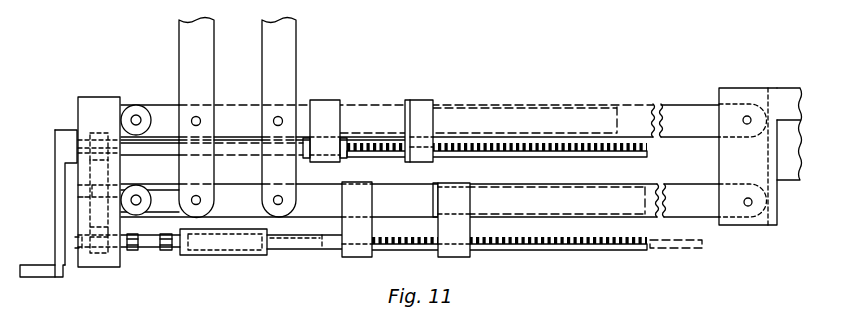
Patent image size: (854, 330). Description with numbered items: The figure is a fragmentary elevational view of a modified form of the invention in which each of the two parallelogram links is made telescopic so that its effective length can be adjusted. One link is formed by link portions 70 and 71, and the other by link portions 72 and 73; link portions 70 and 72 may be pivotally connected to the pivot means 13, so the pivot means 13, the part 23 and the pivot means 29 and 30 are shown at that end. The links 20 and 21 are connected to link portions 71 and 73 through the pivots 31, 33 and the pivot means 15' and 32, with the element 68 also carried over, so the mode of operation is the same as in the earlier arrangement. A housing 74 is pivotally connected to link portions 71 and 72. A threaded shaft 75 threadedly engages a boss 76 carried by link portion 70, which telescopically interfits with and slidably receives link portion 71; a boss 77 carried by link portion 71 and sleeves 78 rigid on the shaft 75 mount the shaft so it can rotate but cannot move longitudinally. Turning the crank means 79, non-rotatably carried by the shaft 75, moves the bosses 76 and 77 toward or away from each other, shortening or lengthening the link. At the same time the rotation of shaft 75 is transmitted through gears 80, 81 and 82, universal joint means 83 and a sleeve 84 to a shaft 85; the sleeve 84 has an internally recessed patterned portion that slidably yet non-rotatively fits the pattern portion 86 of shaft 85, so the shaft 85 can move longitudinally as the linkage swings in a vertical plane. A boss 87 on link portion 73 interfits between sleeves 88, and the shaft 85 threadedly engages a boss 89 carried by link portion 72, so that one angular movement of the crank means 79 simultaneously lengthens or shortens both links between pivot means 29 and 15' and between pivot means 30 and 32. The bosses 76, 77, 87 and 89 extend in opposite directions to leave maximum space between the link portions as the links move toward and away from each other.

The pivot means 13 is at (739, 75).
The pivot means 15' is at (311, 100).
The link 20 is at (201, 80).
The link 21 is at (283, 65).
The pivot means part 23 is at (728, 156).
The pivot means 29 is at (747, 114).
The pivot means 30 is at (746, 207).
The pivot 31 is at (199, 119).
The pivot means 32 is at (274, 201).
The pivot 33 is at (199, 198).
The link connection element 68 is at (272, 180).
The link portion 70 is at (686, 112).
The link portion 71 is at (163, 114).
The link portion 72 is at (687, 193).
The link portion 73 is at (162, 196).
The housing 74 is at (101, 268).
The threaded shaft 75 is at (470, 153).
The boss 76 is at (420, 110).
The boss 77 is at (330, 108).
The sleeves 78 is at (335, 171).
The crank means 79 is at (57, 198).
The gear 80 is at (77, 124).
The gear 81 is at (75, 216).
The gear 82 is at (82, 268).
The universal joint means 83 is at (148, 249).
The sleeve 84 is at (222, 255).
The shaft 85 is at (302, 245).
The pattern portion 86 is at (247, 243).
The boss 87 is at (372, 227).
The sleeves 88 is at (371, 273).
The boss 89 is at (442, 203).